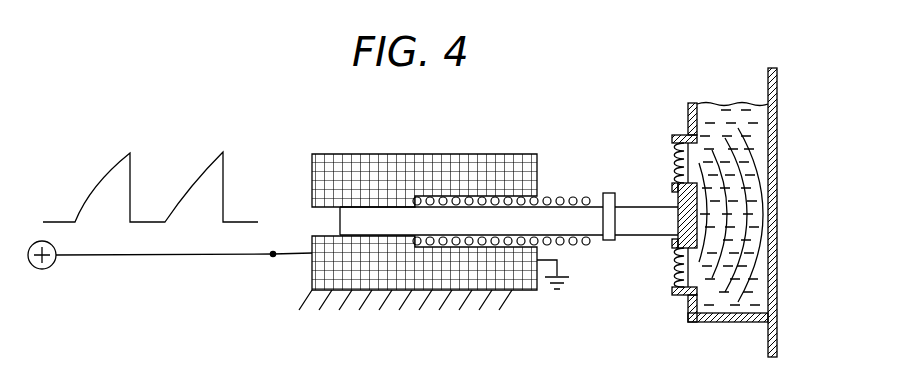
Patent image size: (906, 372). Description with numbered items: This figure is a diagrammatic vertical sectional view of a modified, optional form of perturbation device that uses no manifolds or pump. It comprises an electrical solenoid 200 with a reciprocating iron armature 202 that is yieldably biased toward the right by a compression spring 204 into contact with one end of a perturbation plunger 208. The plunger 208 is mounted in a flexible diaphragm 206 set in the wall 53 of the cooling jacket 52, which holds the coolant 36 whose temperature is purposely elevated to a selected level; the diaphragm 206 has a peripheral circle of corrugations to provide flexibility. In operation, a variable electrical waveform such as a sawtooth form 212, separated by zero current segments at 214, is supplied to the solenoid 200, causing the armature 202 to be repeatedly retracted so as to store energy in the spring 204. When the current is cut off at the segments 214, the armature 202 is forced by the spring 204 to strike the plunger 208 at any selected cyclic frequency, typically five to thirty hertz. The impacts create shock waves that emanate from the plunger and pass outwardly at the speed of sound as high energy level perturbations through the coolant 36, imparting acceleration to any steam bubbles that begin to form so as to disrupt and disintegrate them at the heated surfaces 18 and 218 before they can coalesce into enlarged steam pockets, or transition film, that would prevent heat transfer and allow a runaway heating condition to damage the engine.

The heated surface 18 is at (768, 85).
The coolant 36 is at (728, 293).
The cooling jacket 52 is at (717, 122).
The wall of the cooling jacket 53 is at (688, 110).
The electrical solenoid 200 is at (380, 153).
The reciprocating iron armature 202 is at (358, 222).
The compression spring 204 is at (557, 197).
The flexible diaphragm 206 is at (675, 265).
The perturbation plunger 208 is at (675, 203).
The sawtooth form 212 is at (200, 172).
The zero current segments 214 is at (238, 223).
The heated surface 218 is at (740, 320).